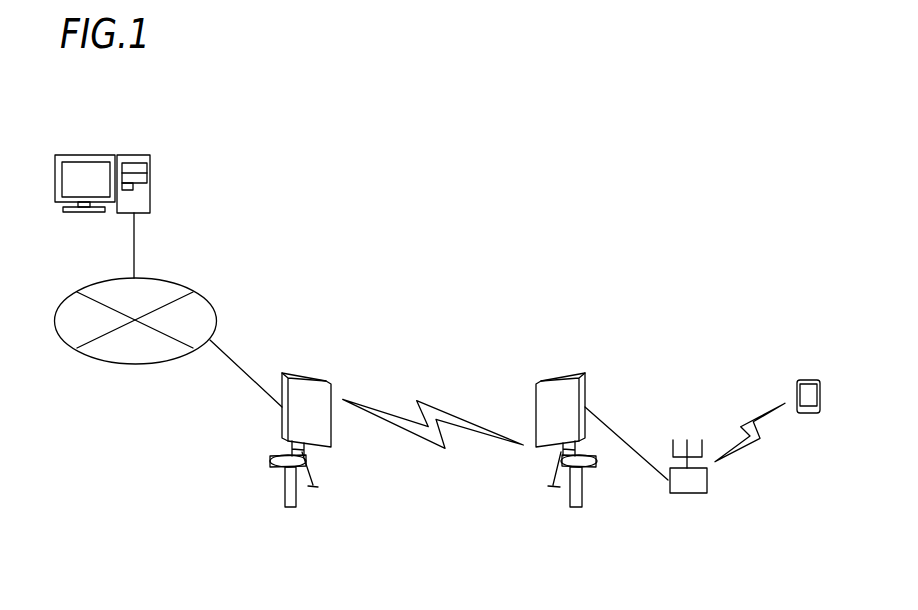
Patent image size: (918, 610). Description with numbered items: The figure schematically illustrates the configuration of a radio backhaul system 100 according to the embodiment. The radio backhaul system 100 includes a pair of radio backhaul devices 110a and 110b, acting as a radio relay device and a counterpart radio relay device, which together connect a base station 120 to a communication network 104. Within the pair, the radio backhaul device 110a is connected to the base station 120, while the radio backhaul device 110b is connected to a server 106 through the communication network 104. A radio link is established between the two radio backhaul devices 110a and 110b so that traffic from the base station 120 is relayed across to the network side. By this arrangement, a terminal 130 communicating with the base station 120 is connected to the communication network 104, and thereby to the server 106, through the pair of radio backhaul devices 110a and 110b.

The radio backhaul system 100 is at (540, 196).
The communication network 104 is at (81, 291).
The server 106 is at (130, 155).
The radio backhaul device 110a is at (563, 390).
The radio backhaul device 110b is at (308, 390).
The base station 120 is at (700, 482).
The terminal 130 is at (810, 385).